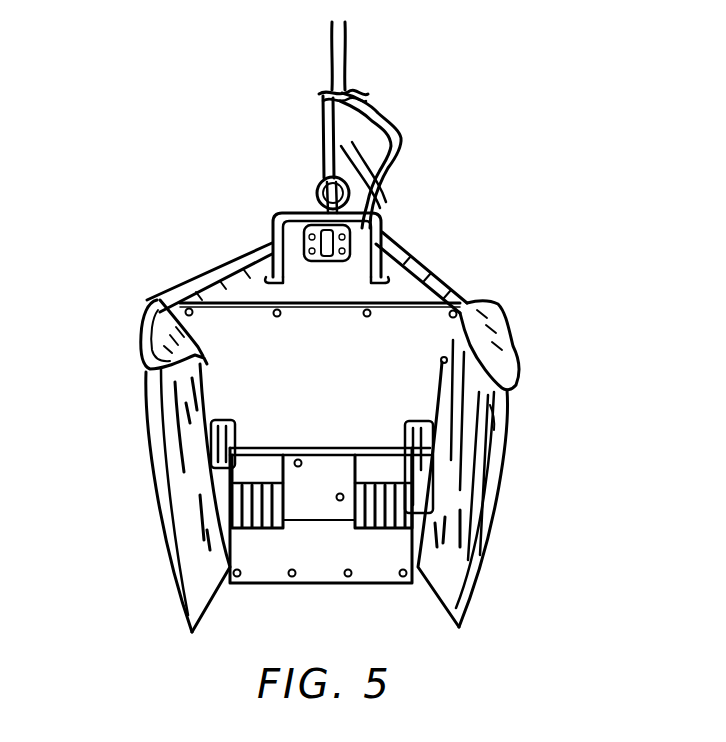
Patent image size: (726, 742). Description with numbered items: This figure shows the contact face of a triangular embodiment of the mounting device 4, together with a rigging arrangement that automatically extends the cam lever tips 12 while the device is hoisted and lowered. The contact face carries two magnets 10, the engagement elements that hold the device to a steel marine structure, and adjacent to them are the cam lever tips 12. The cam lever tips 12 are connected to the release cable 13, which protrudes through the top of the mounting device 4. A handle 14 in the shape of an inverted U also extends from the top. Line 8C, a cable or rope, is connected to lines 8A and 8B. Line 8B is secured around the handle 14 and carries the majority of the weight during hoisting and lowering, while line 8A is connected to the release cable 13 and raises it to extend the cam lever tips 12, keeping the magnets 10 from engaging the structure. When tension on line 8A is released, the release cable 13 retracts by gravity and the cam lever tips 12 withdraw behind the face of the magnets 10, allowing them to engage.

The mounting device 4 is at (428, 300).
The line 8A is at (321, 163).
The line 8B is at (400, 138).
The line 8C is at (352, 53).
The magnet 10 is at (255, 530).
The cam lever tips 12 is at (215, 440).
The release cable 13 is at (316, 191).
The handle 14 is at (388, 230).